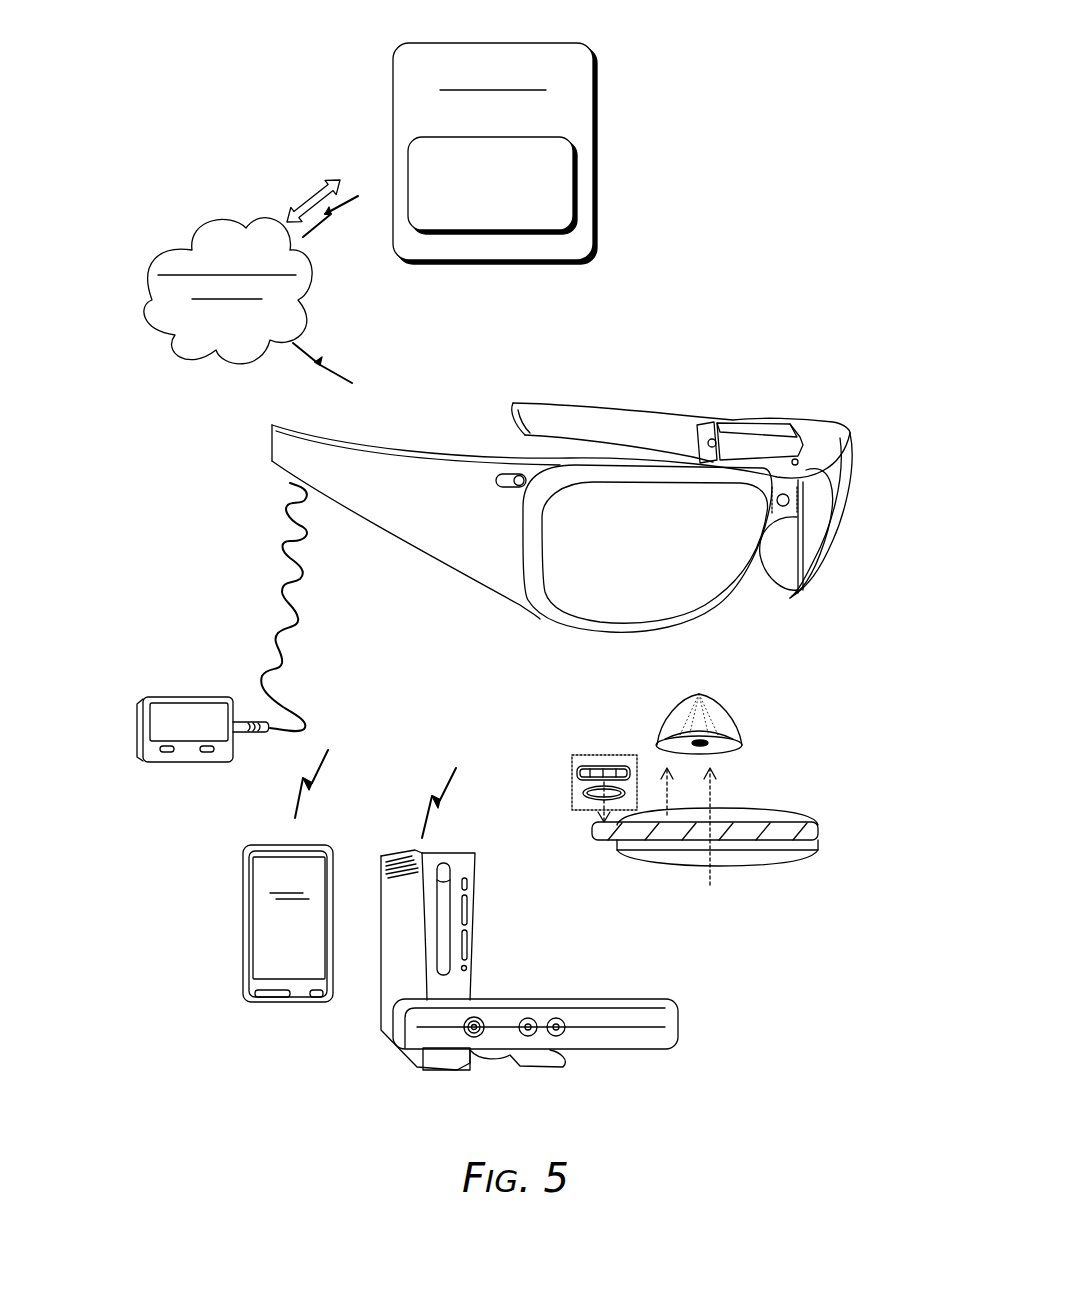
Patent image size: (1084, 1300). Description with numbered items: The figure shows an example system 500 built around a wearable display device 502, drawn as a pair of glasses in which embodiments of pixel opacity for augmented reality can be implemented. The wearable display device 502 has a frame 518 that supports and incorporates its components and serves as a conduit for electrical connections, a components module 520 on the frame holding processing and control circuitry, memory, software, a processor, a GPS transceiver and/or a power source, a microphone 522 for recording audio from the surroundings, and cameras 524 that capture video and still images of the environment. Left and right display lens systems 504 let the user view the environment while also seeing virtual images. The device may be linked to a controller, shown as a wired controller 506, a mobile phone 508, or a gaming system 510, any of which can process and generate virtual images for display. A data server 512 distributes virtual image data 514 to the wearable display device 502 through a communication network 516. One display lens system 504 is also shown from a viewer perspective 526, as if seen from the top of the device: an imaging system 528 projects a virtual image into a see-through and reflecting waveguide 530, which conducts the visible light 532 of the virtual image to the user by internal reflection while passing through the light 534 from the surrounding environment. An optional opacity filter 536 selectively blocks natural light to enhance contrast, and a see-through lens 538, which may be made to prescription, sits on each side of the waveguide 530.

The system 500 is at (791, 62).
The wearable display device 502 is at (729, 331).
The display lens system 504 is at (820, 538).
The controller 506 is at (171, 797).
The mobile phone 508 is at (278, 1033).
The gaming system 510 is at (516, 1099).
The data server 512 is at (479, 114).
The virtual image data 514 is at (479, 218).
The communication network 516 is at (213, 334).
The frame 518 is at (455, 533).
The components module 520 is at (800, 425).
The microphone 522 is at (789, 507).
The camera 524 is at (502, 472).
The viewer perspective 526 is at (611, 388).
The imaging system 528 is at (588, 752).
The see-through and reflecting waveguide 530 is at (782, 840).
The visible light 532 is at (657, 770).
The light from the surrounding environment 534 is at (697, 909).
The opacity filter 536 is at (727, 848).
The see-through lens 538 is at (770, 810).